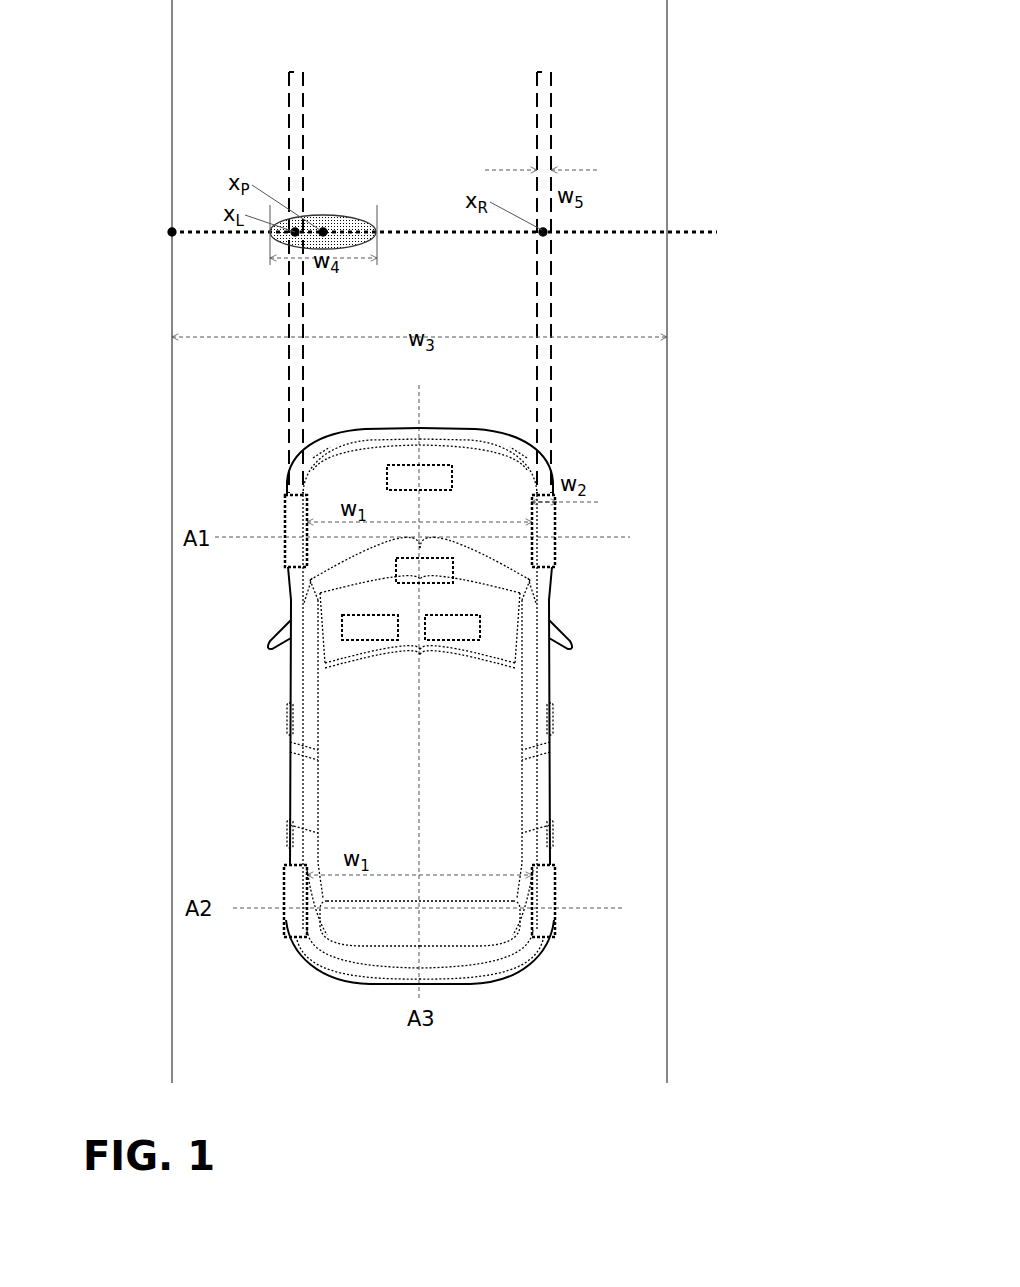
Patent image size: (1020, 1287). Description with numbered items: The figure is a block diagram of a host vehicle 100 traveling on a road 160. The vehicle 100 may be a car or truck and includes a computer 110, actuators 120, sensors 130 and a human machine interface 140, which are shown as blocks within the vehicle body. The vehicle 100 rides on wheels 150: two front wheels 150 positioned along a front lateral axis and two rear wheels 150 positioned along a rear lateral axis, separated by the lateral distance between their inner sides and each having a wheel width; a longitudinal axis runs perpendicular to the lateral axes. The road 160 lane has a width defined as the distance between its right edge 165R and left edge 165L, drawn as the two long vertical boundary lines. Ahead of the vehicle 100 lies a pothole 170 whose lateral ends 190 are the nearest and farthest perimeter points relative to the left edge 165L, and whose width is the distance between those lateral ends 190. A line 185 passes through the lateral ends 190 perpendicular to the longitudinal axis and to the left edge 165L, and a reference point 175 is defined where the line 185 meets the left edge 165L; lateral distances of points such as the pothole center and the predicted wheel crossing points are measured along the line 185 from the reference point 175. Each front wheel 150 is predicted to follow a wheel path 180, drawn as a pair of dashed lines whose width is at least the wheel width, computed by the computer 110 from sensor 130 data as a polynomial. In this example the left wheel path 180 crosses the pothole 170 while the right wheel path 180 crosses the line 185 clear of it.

The vehicle 100 is at (440, 822).
The computer 110 is at (424, 571).
The actuator 120 is at (419, 478).
The sensor 130 is at (452, 628).
The human machine interface 140 is at (370, 628).
The wheel 150 is at (285, 518).
The road 160 is at (466, 33).
The left edge 165L is at (172, 135).
The right edge 165R is at (668, 583).
The pothole 170 is at (340, 213).
The reference point 175 is at (172, 233).
The wheel path 180 is at (303, 105).
The line 185 is at (685, 233).
The lateral end 190 is at (270, 230).